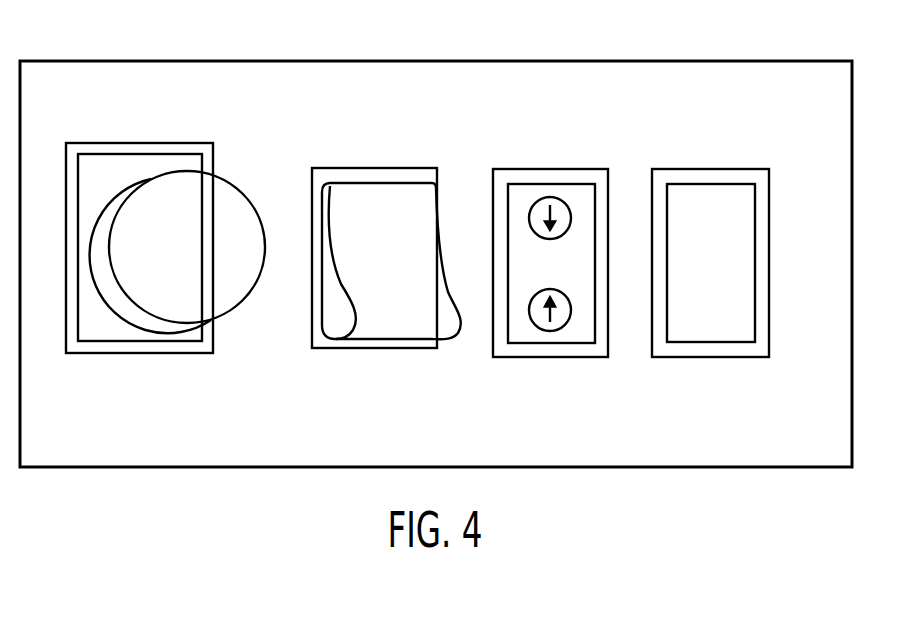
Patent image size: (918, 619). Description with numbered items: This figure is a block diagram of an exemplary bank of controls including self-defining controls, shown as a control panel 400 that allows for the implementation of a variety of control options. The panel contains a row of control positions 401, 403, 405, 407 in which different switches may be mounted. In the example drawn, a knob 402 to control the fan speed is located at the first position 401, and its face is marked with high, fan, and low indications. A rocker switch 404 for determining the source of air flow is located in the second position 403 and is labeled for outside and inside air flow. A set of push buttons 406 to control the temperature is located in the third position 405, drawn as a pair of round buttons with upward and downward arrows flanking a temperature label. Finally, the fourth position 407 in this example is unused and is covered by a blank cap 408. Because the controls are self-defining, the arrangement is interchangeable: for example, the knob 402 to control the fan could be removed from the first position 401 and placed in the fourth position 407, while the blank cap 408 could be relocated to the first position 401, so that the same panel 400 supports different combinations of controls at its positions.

The control panel 400 is at (461, 40).
The first position 401 is at (137, 345).
The knob 402 is at (210, 195).
The second position 403 is at (383, 344).
The rocker switch 404 is at (387, 190).
The third position 405 is at (547, 344).
The set of push buttons 406 is at (577, 192).
The fourth position 407 is at (710, 348).
The blank cap 408 is at (732, 193).